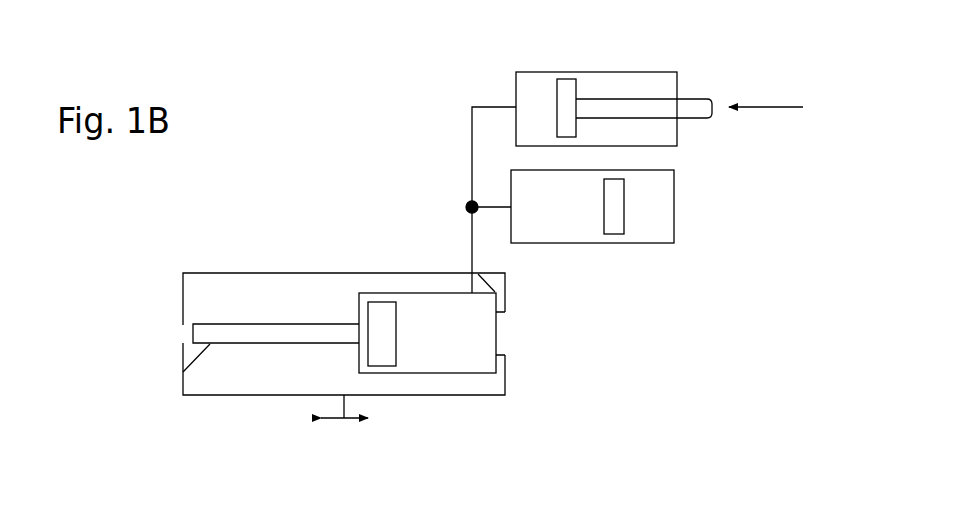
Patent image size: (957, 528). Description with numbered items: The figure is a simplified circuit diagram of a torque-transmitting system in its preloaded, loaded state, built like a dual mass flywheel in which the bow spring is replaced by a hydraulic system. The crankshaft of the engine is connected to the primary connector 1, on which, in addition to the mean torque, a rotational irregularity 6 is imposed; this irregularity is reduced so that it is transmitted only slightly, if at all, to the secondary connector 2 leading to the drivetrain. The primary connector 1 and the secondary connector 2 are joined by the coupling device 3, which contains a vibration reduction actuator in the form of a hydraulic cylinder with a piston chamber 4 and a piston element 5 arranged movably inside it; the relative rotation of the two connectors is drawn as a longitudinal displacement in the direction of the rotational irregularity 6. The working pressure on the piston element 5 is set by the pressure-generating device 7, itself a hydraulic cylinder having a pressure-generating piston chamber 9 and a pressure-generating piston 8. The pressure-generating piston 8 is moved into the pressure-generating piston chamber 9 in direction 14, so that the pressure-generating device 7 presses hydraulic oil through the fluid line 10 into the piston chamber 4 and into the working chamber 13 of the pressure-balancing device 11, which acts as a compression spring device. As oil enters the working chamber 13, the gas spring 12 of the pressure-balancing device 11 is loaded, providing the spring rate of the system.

The primary connector 1 is at (507, 372).
The secondary connector 2 is at (508, 271).
The coupling device 3 is at (508, 335).
The piston chamber 4 is at (455, 342).
The piston element 5 is at (245, 343).
The rotational irregularity 6 is at (332, 420).
The pressure-generating device 7 is at (683, 63).
The pressure-generating piston 8 is at (697, 97).
The pressure-generating piston chamber 9 is at (538, 97).
The fluid line 10 is at (470, 122).
The pressure-balancing device 11 is at (681, 165).
The gas spring 12 is at (663, 210).
The working chamber 13 is at (527, 175).
The direction 14 is at (767, 107).